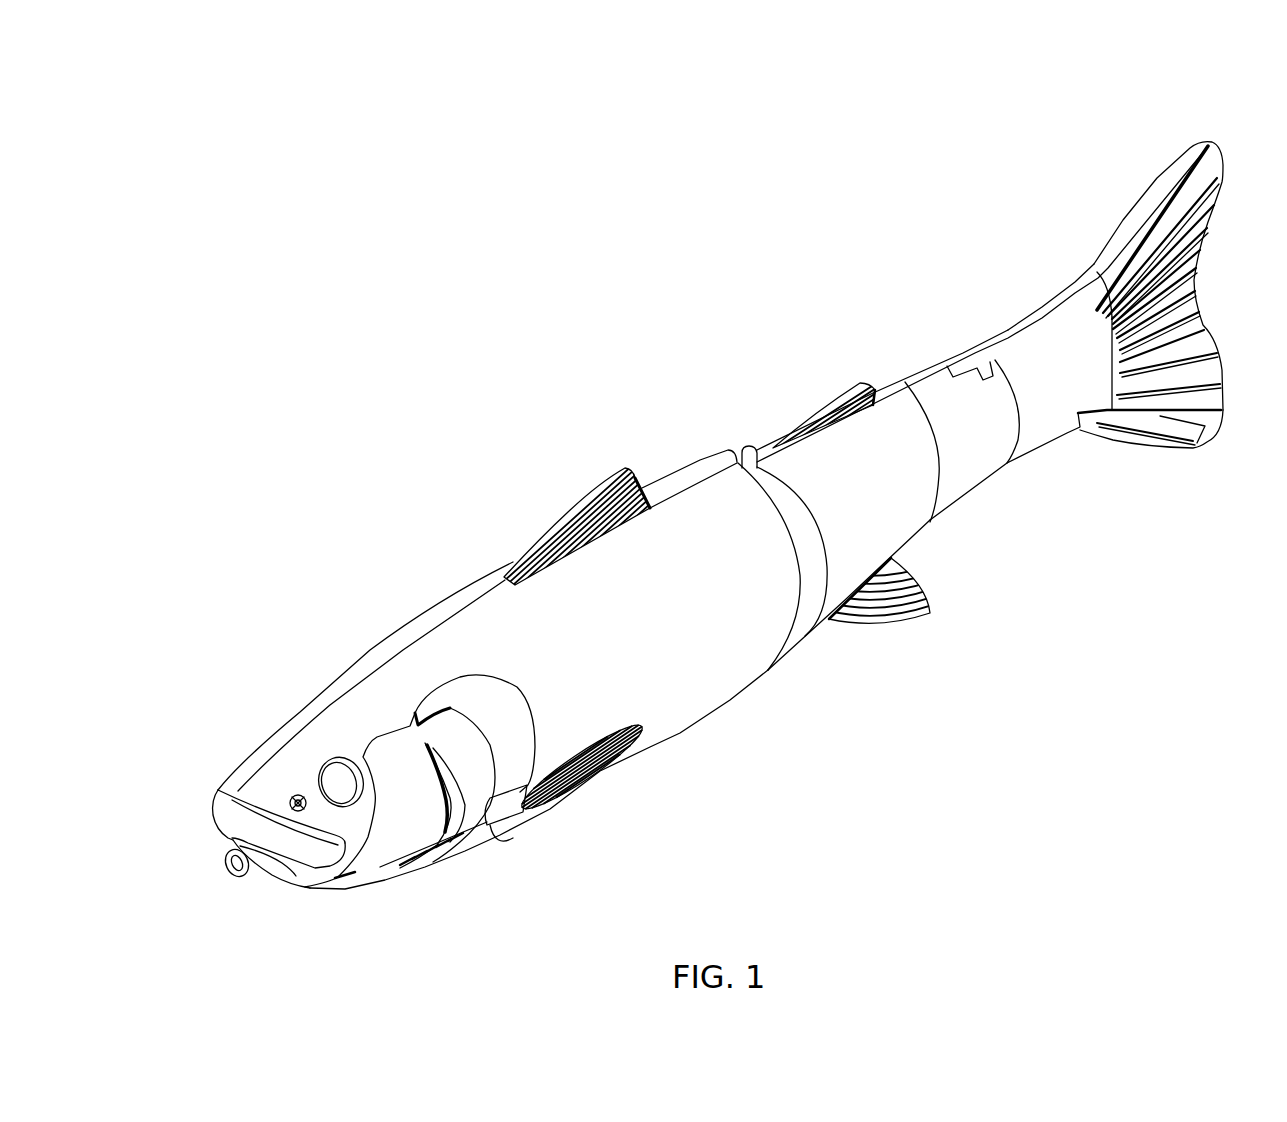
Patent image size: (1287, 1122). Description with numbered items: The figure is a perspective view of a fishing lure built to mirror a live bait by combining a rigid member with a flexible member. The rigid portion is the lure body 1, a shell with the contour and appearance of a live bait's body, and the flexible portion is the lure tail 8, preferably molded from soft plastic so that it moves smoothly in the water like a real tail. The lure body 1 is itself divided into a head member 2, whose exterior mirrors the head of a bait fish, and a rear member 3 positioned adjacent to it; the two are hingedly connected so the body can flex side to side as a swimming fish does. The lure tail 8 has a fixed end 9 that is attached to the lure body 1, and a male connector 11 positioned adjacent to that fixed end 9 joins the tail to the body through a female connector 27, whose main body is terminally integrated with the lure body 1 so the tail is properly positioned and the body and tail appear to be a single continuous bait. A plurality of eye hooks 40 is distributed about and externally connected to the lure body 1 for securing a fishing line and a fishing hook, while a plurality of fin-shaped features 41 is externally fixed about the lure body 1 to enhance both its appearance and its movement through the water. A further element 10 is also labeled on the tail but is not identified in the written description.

The lure body 1 is at (463, 540).
The head member 2 is at (392, 630).
The rear member 3 is at (879, 383).
The lure tail 8 is at (1075, 253).
The fixed end 9 is at (992, 334).
The caudal fin 10 is at (1199, 141).
The male connector 11 is at (963, 350).
The female connector 27 is at (918, 370).
The eye hooks 40 is at (226, 871).
The fin-shaped features 41 is at (623, 465).